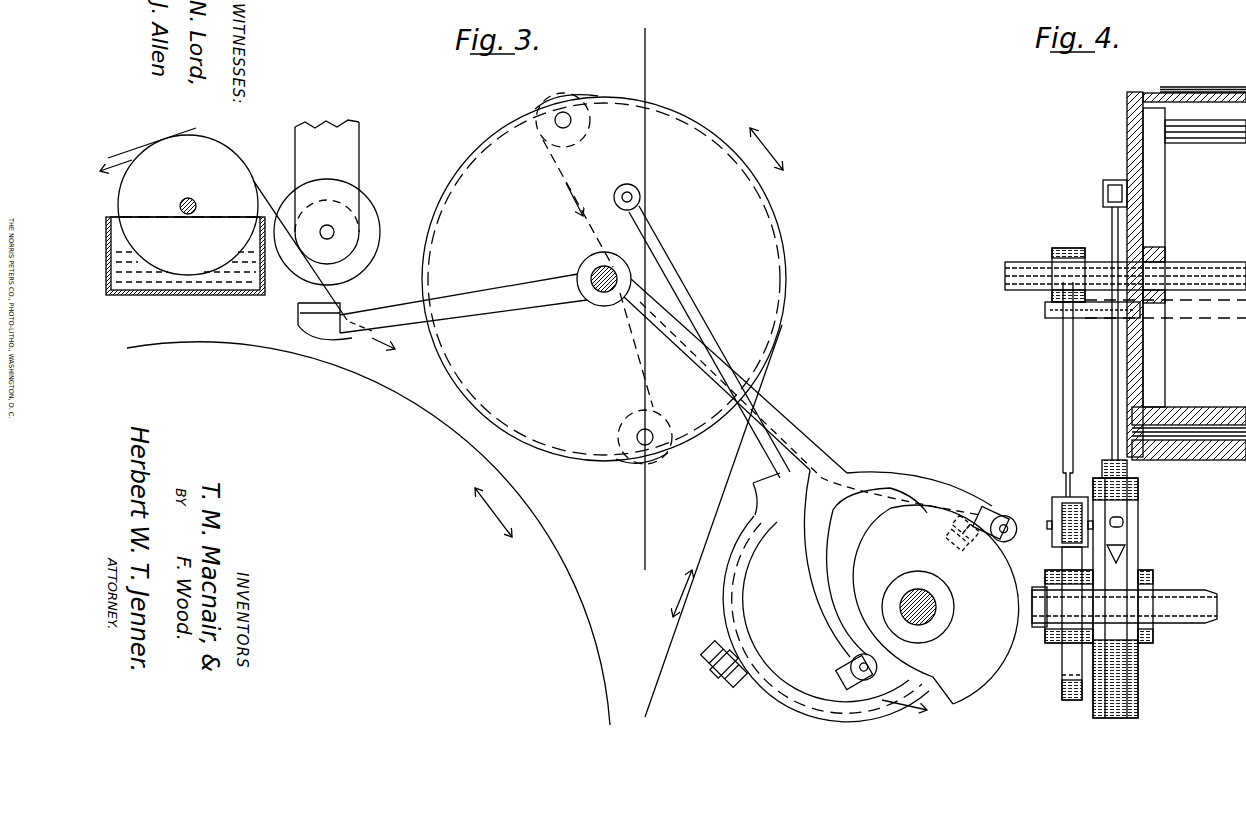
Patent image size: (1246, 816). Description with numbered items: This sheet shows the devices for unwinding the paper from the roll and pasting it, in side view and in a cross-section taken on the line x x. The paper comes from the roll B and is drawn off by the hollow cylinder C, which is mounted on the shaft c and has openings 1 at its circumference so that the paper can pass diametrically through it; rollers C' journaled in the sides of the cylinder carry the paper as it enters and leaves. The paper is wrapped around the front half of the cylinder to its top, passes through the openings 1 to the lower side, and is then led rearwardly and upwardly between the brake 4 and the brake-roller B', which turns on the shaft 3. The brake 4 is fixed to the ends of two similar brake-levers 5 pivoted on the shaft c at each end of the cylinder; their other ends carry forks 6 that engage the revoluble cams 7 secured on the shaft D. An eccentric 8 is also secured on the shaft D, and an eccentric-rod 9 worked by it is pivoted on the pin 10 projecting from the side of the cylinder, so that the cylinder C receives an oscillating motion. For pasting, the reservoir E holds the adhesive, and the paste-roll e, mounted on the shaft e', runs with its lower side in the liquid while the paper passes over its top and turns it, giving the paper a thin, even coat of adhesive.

In FIG. 3, the openings 1 is at (587, 103).
In FIG. 3, the shaft 3 is at (334, 229).
In FIG. 3, the brake 4 is at (298, 313).
In FIG. 4, the brake 4 is at (1052, 320).
In FIG. 3, the brake-levers 5 is at (666, 465).
In FIG. 4, the brake-levers 5 is at (1063, 378).
In FIG. 3, the forks 6 is at (998, 515).
In FIG. 4, the forks 6 is at (1052, 507).
In FIG. 3, the cams 7 is at (936, 604).
In FIG. 4, the cams 7 is at (1072, 623).
In FIG. 3, the eccentric 8 is at (813, 597).
In FIG. 4, the eccentric 8 is at (1138, 672).
In FIG. 3, the eccentric-rod 9 is at (702, 326).
In FIG. 4, the eccentric-rod 9 is at (1112, 388).
In FIG. 3, the pin 10 is at (640, 196).
In FIG. 4, the pin 10 is at (1102, 192).
In FIG. 3, the roll of paper B is at (368, 533).
In FIG. 3, the brake-roller B' is at (331, 202).
In FIG. 3, the hollow cylinder C is at (604, 279).
In FIG. 4, the hollow cylinder C is at (1186, 273).
In FIG. 3, the rollers C' is at (602, 281).
In FIG. 4, the rollers C' is at (1205, 301).
In FIG. 3, the shaft c is at (598, 300).
In FIG. 4, the shaft c is at (1005, 272).
In FIG. 3, the shaft D is at (940, 608).
In FIG. 4, the shaft D is at (1165, 598).
In FIG. 3, the reservoir E is at (185, 256).
In FIG. 3, the paste-roll e is at (179, 201).
In FIG. 3, the shaft e' is at (187, 222).
In FIG. 3, the line x x is at (643, 299).